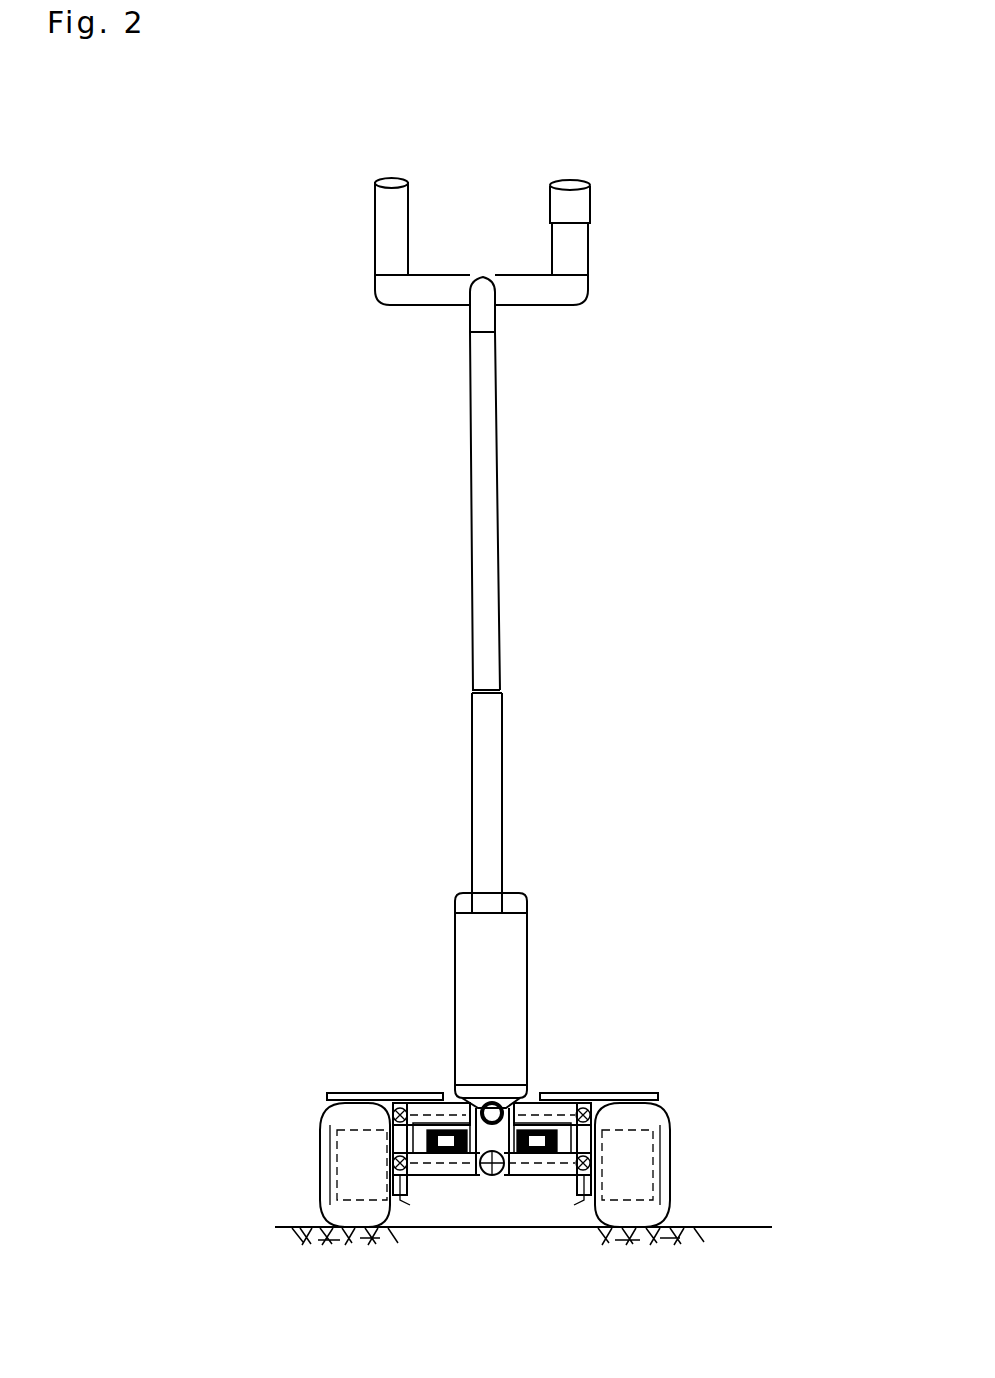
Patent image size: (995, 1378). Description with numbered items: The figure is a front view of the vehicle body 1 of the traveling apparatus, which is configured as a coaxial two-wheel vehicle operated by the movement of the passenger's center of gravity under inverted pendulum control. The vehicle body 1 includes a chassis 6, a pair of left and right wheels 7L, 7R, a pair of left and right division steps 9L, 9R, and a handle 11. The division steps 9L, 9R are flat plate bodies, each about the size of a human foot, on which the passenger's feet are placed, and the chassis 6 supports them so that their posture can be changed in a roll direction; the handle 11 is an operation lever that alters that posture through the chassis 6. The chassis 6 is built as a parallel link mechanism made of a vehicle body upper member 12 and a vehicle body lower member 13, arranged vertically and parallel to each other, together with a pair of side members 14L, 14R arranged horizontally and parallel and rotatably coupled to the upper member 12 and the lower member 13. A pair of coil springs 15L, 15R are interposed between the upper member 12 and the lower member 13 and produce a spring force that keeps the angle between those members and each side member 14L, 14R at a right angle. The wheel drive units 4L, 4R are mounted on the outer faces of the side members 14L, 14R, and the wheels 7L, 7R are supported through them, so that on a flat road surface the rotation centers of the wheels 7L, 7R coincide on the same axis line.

The vehicle body 1 is at (373, 643).
The handle 11 is at (487, 550).
The vehicle body upper member 12 is at (513, 1115).
The vehicle body lower member 13 is at (545, 1178).
The chassis 6 is at (455, 1190).
The coil spring 15R is at (445, 1155).
The coil spring 15L is at (530, 1155).
The side member 14R is at (402, 1207).
The side member 14L is at (583, 1205).
The division step 9R is at (358, 1093).
The division step 9L is at (627, 1093).
The wheel 7R is at (327, 1113).
The wheel 7L is at (655, 1115).
The wheel drive unit 4R is at (323, 1137).
The wheel drive unit 4L is at (663, 1137).